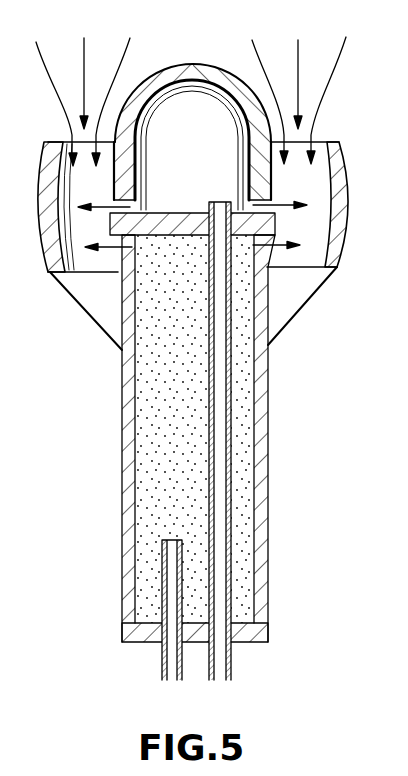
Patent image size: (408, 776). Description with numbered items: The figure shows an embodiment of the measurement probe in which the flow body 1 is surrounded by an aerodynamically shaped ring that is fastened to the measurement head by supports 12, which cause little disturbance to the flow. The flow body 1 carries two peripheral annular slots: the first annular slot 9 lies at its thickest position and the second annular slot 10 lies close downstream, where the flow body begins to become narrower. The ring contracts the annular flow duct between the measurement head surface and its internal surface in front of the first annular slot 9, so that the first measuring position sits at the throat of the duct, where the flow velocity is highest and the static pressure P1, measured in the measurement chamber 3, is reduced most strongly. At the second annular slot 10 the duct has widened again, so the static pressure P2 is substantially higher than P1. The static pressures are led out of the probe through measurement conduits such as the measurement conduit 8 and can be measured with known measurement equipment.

The flow body 1 is at (43, 186).
The measurement chamber 3 is at (184, 98).
The measurement conduit 8 is at (146, 616).
The first annular slot 9 is at (253, 681).
The second annular slot 10 is at (130, 240).
The supports 12 is at (84, 311).
The static pressure p1 P1 is at (219, 185).
The static pressure p2 P2 is at (194, 429).